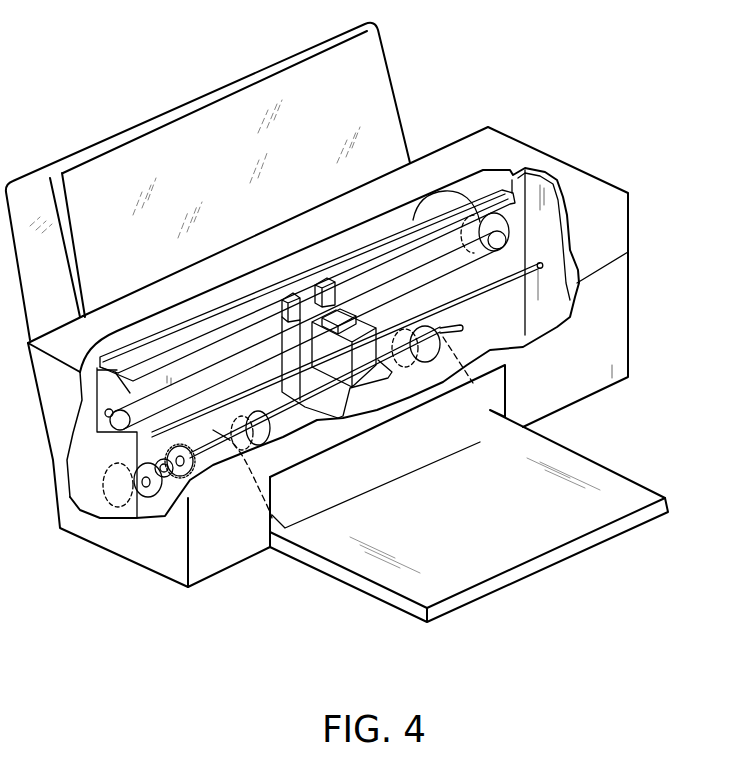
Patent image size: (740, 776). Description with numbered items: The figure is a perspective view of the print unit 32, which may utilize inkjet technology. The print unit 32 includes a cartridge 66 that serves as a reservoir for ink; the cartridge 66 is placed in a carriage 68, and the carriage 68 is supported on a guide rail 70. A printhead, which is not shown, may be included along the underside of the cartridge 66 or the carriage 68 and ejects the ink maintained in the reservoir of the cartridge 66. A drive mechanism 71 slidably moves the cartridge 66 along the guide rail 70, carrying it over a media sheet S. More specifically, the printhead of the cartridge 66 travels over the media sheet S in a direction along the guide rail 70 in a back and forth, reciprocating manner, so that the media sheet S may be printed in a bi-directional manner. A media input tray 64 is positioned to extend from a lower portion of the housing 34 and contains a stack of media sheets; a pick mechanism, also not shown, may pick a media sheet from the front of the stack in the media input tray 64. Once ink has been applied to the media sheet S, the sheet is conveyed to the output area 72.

The print unit 32 is at (345, 321).
The housing 34 is at (162, 558).
The media input tray 64 is at (370, 80).
The cartridge 66 is at (368, 363).
The carriage 68 is at (310, 312).
The guide rail 70 is at (523, 250).
The drive mechanism 71 is at (507, 230).
The output area 72 is at (577, 460).
The media sheet S is at (297, 503).